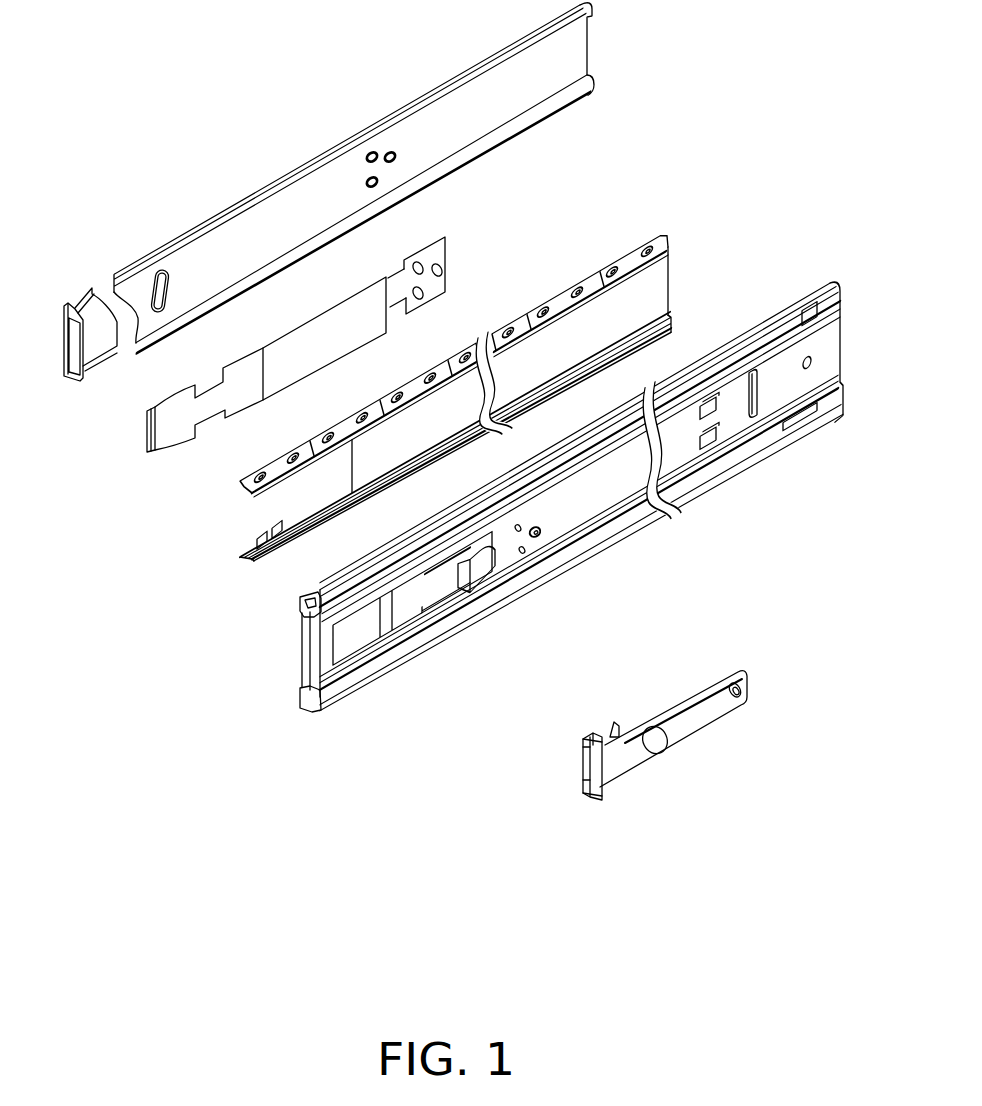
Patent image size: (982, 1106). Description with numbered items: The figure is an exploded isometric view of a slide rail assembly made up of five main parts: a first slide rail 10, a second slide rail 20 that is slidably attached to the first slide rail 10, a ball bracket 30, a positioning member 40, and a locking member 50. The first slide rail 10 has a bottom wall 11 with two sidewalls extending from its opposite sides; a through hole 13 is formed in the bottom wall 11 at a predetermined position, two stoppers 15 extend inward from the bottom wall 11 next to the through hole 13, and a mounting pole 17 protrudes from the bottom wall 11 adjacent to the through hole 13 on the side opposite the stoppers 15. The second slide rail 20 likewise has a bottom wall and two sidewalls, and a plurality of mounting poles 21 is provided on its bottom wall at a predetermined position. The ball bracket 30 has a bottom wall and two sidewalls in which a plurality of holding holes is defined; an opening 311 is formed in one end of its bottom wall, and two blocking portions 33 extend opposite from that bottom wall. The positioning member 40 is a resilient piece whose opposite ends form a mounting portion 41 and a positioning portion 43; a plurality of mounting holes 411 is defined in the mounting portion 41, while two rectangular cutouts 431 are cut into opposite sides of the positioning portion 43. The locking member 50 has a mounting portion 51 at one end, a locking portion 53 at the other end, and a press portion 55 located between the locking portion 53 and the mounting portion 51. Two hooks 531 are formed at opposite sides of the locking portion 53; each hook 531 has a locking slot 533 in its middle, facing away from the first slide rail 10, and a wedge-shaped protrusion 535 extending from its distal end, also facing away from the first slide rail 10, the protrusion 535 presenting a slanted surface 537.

The first slide rail 10 is at (571, 497).
The bottom wall 11 is at (575, 498).
The through hole 13 is at (412, 598).
The stoppers 15 is at (476, 571).
The mounting pole 17 is at (537, 537).
The second slide rail 20 is at (368, 190).
The mounting poles 21 is at (397, 160).
The ball bracket 30 is at (474, 407).
The blocking portions 33 is at (454, 368).
The opening 311 is at (256, 497).
The positioning member 40 is at (346, 349).
The mounting portion 41 is at (472, 277).
The mounting holes 411 is at (442, 272).
The positioning portion 43 is at (276, 380).
The rectangular cutouts 431 is at (208, 420).
The locking member 50 is at (662, 750).
The mounting portion 51 is at (701, 728).
The locking portion 53 is at (582, 788).
The hooks 531 is at (585, 735).
The locking slot 533 is at (607, 747).
The wedge-shaped protrusion 535 is at (603, 722).
The slanted surface 537 is at (683, 711).
The press portion 55 is at (658, 747).